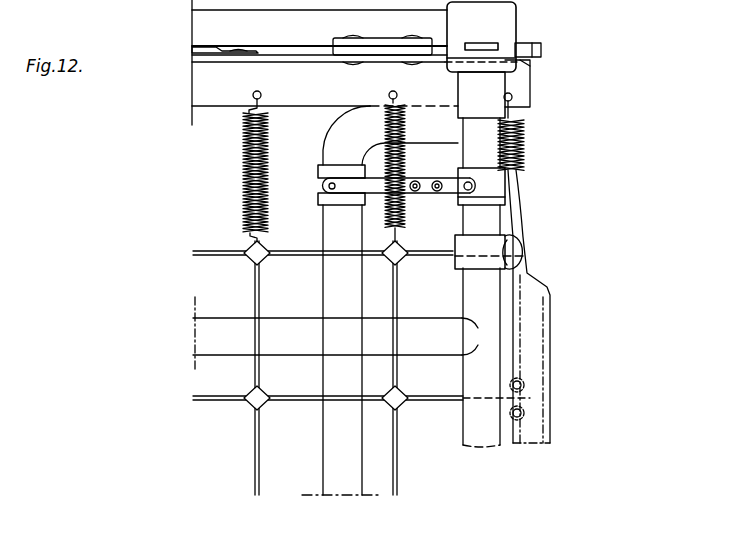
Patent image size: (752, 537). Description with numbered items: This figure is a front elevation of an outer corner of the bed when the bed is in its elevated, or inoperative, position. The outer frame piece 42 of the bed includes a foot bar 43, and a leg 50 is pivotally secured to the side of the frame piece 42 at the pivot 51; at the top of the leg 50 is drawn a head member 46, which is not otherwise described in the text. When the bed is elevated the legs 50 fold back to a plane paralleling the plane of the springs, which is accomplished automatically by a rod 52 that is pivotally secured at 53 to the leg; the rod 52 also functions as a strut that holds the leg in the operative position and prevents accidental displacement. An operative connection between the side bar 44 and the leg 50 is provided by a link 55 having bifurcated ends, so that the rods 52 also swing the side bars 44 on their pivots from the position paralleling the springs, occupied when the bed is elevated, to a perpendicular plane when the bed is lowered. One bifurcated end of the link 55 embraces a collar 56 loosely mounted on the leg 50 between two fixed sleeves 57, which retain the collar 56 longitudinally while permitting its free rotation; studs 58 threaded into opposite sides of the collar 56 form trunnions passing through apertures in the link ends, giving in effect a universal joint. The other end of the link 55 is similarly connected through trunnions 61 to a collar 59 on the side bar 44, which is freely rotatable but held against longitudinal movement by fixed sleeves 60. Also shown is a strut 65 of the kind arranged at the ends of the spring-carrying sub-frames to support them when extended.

The outer frame piece 42 is at (295, 106).
The foot bar 43 is at (299, 11).
The side bar 44 is at (327, 238).
The slide head 46 is at (510, 22).
The leg 50 is at (473, 132).
The pivot 51 is at (532, 60).
The rod 52 is at (537, 302).
The pivot 53 is at (530, 256).
The link 55 is at (416, 191).
The collar 56 is at (498, 188).
The fixed sleeve 57 is at (460, 170).
The stud 58 is at (461, 200).
The collar 59 is at (318, 187).
The fixed sleeve 60 is at (318, 170).
The trunnion 61 is at (335, 186).
The strut 65 is at (221, 51).